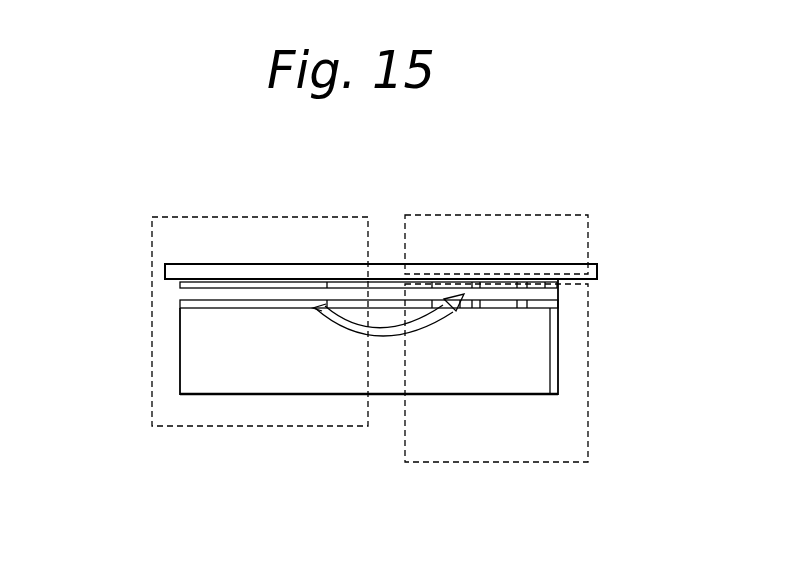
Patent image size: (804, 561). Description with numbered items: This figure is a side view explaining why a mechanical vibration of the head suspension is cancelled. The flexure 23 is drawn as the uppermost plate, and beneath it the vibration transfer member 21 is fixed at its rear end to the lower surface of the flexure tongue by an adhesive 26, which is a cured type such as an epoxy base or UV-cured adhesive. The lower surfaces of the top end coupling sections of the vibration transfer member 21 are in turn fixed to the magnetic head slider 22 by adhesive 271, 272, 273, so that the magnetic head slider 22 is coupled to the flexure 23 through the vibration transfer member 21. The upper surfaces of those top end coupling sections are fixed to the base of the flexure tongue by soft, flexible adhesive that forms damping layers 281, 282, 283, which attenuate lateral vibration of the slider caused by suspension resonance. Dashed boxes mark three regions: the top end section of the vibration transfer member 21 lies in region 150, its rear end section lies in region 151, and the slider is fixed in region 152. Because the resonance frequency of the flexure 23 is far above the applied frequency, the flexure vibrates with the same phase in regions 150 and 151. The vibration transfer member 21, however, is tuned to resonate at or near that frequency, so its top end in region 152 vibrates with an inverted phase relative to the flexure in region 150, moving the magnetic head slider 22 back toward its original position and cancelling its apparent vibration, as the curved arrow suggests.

The vibration transfer member 21 is at (187, 293).
The magnetic head slider 22 is at (192, 368).
The flexure 23 is at (175, 270).
The adhesive 26 is at (220, 282).
The adhesive 271 is at (540, 310).
The adhesive 272 is at (497, 310).
The adhesive 273 is at (460, 310).
The damping layer 281 is at (550, 283).
The damping layer 282 is at (507, 263).
The damping layer 283 is at (450, 263).
The region 150 is at (500, 215).
The region 151 is at (288, 217).
The region 152 is at (497, 462).